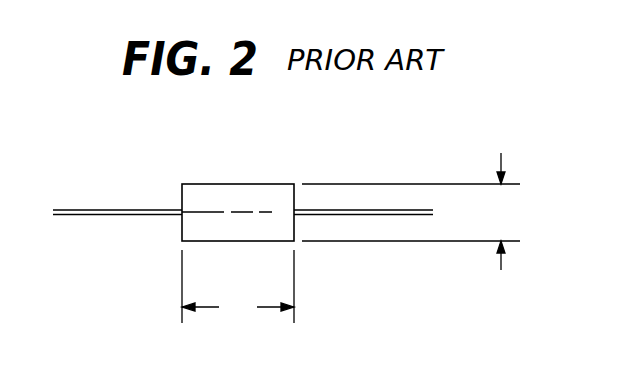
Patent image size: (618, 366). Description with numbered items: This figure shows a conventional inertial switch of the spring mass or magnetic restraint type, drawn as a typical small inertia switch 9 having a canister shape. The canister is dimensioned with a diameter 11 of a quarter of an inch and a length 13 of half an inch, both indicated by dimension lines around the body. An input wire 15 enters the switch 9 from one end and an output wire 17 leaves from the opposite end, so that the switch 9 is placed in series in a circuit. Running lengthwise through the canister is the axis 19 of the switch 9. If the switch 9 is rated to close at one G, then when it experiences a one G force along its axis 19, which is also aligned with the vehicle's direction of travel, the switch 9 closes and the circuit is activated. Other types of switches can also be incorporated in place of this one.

The inertia switch 9 is at (222, 184).
The diameter 11 is at (412, 211).
The length 13 is at (238, 287).
The input wire 15 is at (87, 209).
The output wire 17 is at (362, 208).
The axis 19 is at (267, 212).